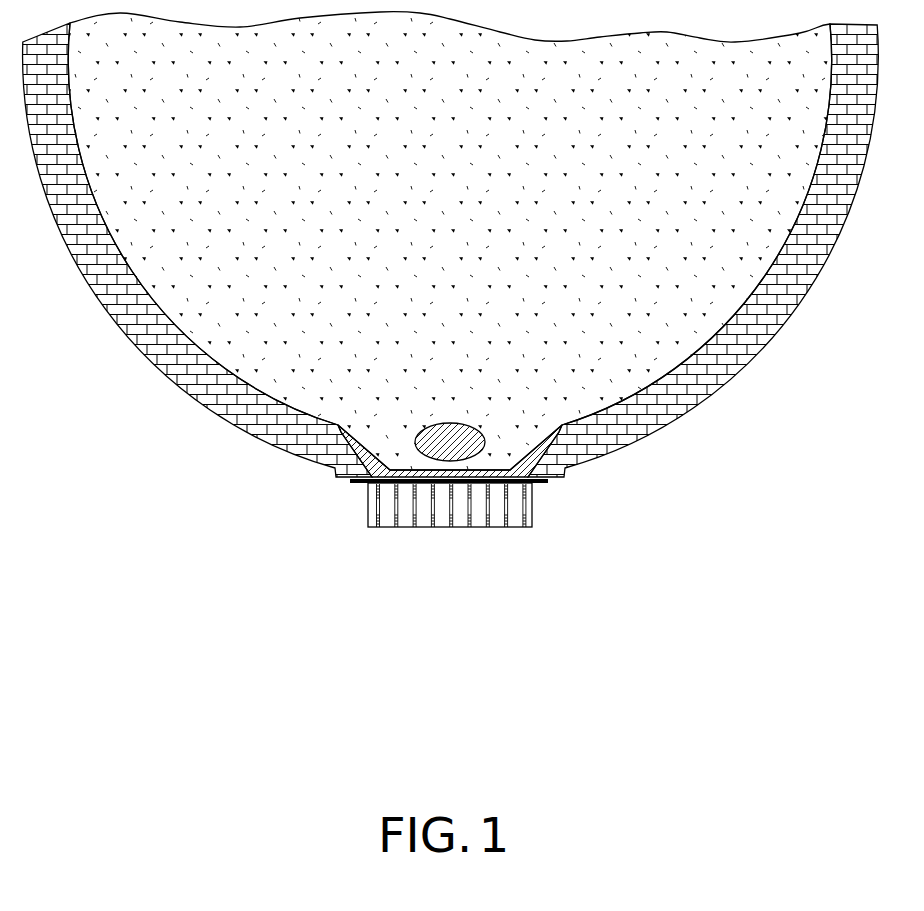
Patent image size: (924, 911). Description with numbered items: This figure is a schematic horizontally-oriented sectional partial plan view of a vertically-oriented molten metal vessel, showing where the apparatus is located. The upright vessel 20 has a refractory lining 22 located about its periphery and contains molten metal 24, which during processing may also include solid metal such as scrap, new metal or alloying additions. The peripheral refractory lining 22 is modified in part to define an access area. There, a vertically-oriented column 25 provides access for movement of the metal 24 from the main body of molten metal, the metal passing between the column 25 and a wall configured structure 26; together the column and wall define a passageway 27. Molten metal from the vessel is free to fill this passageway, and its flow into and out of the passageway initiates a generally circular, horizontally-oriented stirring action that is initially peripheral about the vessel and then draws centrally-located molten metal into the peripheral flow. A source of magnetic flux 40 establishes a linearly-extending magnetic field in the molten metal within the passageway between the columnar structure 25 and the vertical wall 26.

The upright vessel 20 is at (763, 488).
The refractory lining 22 is at (182, 387).
The molten metal 24 is at (453, 153).
The column 25 is at (437, 452).
The wall configured structure 26 is at (537, 457).
The passageway 27 is at (446, 462).
The source of magnetic flux 40 is at (535, 505).